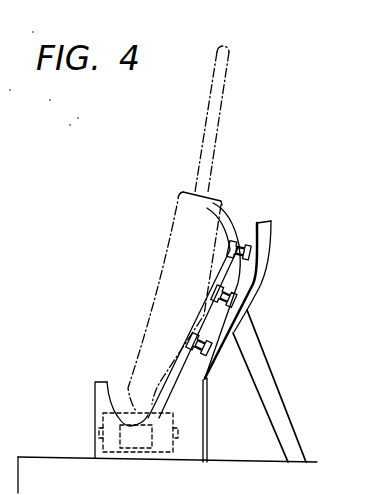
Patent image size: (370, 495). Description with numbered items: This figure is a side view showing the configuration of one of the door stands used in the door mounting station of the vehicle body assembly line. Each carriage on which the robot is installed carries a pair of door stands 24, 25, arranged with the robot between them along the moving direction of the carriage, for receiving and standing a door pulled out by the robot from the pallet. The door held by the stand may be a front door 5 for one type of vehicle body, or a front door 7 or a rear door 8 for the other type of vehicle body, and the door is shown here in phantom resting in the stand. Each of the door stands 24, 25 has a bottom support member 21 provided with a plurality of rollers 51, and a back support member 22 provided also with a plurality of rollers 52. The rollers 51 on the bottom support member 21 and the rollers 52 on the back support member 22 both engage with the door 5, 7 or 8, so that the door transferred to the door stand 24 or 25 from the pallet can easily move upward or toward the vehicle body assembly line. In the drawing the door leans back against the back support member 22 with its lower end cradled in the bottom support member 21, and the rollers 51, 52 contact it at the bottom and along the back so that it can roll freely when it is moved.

The rear door 8 is at (208, 108).
The front door 5 is at (212, 119).
The front door 7 is at (175, 301).
The roller 52 is at (238, 243).
The door stand 25 is at (264, 280).
The door stand 24 is at (194, 310).
The back support member 22 is at (249, 309).
The roller 51 is at (125, 410).
The bottom support member 21 is at (207, 443).